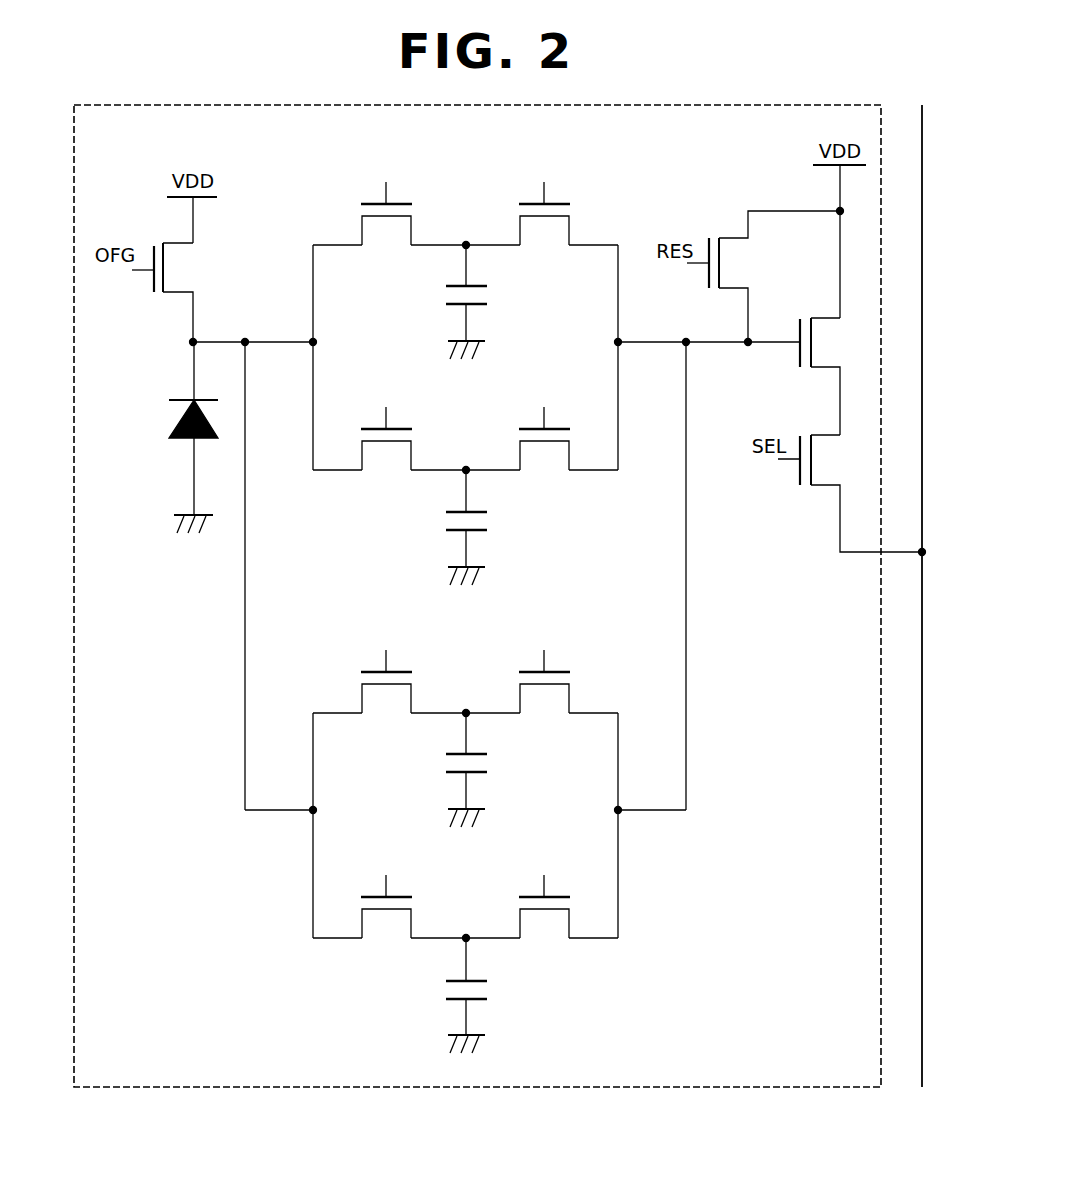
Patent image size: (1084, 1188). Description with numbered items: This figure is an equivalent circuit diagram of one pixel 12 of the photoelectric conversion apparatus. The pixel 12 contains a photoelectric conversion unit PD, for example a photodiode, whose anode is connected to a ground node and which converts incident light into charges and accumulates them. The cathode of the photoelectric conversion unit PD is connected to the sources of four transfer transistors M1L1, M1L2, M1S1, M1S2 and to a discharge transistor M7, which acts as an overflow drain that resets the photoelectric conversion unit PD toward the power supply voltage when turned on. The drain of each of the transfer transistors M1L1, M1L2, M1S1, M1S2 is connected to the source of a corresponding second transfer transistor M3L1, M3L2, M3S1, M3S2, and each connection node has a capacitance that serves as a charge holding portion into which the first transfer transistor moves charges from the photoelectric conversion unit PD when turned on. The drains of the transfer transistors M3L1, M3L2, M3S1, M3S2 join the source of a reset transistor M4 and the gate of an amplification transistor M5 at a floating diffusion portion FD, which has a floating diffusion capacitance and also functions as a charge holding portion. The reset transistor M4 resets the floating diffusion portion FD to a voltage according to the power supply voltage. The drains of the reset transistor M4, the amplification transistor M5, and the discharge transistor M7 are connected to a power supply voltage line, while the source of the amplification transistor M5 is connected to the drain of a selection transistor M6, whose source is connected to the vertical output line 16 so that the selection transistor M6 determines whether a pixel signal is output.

The pixel 12 is at (688, 1089).
The vertical output line 16 is at (922, 1064).
The discharge transistor M7 is at (178, 300).
The photoelectric conversion unit PD is at (175, 415).
The transfer transistor M1L1 is at (353, 232).
The transfer transistor M3L1 is at (577, 228).
The transfer transistor M1L2 is at (388, 468).
The transfer transistor M3L2 is at (545, 468).
The transfer transistor M1S1 is at (353, 702).
The transfer transistor M3S1 is at (578, 695).
The transfer transistor M1S2 is at (388, 936).
The transfer transistor M3S2 is at (545, 936).
The floating diffusion portion FD is at (688, 345).
The reset transistor M4 is at (736, 232).
The amplification transistor M5 is at (815, 312).
The selection transistor M6 is at (815, 490).